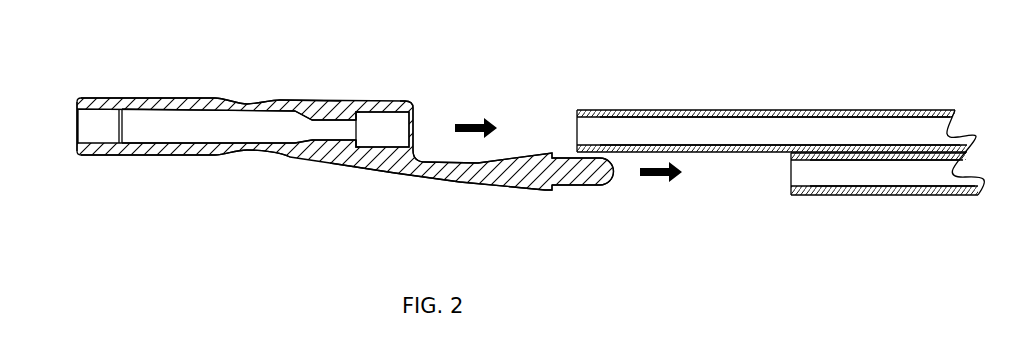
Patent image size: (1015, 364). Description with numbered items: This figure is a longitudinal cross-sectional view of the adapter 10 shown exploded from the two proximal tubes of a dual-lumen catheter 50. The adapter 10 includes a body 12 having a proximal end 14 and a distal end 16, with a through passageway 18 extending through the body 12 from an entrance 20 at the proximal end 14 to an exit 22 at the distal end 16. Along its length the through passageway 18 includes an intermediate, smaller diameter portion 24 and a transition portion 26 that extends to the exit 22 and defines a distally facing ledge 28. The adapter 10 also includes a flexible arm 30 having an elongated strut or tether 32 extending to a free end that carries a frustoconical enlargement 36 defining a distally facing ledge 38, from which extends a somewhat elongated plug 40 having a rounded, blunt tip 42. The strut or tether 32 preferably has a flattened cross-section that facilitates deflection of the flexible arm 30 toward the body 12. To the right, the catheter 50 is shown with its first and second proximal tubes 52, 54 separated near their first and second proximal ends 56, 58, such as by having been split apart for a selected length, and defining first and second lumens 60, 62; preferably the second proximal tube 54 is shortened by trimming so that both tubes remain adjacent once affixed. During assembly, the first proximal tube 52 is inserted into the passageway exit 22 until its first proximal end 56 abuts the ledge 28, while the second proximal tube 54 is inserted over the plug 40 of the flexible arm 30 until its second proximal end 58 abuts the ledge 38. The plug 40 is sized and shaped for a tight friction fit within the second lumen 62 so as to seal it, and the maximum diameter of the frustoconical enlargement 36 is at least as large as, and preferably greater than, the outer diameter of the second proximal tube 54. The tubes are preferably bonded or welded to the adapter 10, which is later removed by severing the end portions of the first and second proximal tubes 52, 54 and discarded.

The adapter 10 is at (240, 63).
The body 12 is at (184, 166).
The proximal end 14 is at (106, 87).
The distal end 16 is at (415, 87).
The through passageway 18 is at (288, 147).
The entrance 20 is at (87, 162).
The exit 22 is at (376, 93).
The intermediate, smaller diameter portion 24 is at (157, 127).
The transition portion 26 is at (330, 153).
The distally facing ledge 28 is at (348, 103).
The flexible arm 30 is at (386, 187).
The strut or tether 32 is at (437, 193).
The frustoconical enlargement 36 is at (507, 198).
The distally facing ledge 38 is at (546, 141).
The plug 40 is at (586, 198).
The rounded, blunt tip 42 is at (625, 189).
The catheter 50 is at (757, 143).
The first proximal tube 52 is at (748, 103).
The second proximal tube 54 is at (885, 206).
The first proximal end 56 is at (570, 99).
The second proximal end 58 is at (796, 208).
The first lumen 60 is at (742, 130).
The second lumen 62 is at (928, 177).